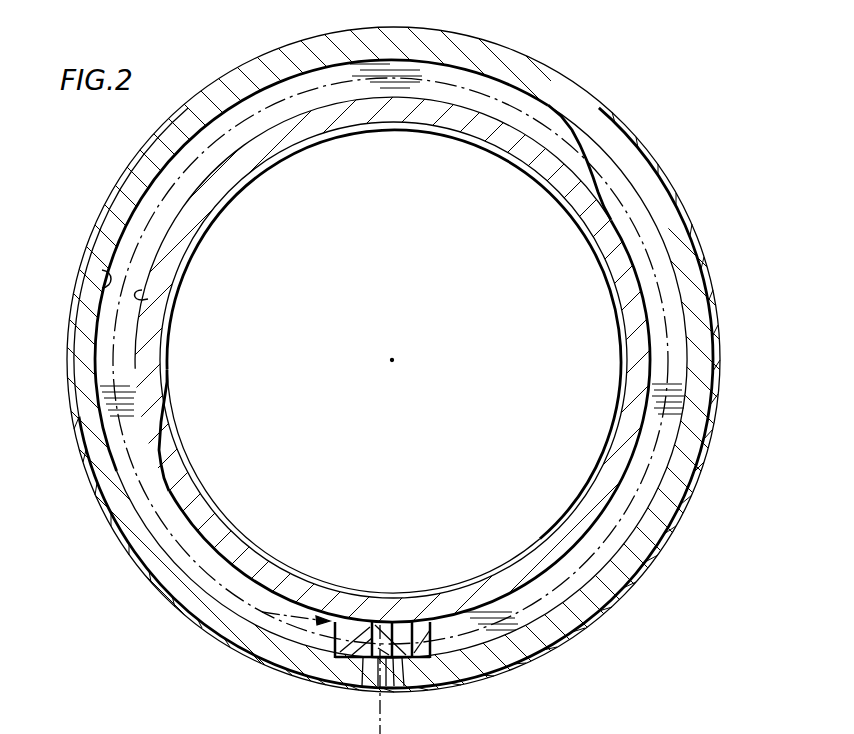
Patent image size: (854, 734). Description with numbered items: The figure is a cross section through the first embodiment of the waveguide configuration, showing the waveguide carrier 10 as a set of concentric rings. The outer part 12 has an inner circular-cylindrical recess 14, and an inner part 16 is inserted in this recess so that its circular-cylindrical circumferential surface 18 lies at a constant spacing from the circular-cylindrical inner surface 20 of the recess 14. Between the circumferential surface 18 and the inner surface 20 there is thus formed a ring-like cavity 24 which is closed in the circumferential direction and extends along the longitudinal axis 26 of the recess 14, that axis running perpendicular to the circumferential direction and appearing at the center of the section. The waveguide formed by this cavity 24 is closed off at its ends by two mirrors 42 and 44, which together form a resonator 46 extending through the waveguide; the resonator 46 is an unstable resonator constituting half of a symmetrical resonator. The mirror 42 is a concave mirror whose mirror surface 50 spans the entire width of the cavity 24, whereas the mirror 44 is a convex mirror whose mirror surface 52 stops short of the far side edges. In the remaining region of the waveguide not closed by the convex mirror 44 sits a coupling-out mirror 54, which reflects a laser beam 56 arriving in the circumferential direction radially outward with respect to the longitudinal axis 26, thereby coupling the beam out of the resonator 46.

The waveguide carrier 10 is at (623, 105).
The outer part 12 is at (507, 70).
The inner circular-cylindrical recess 14 is at (128, 246).
The inner part 16 is at (469, 120).
The circumferential surface 18 is at (146, 293).
The inner surface 20 is at (106, 280).
The ring-like cavity 24 is at (679, 337).
The longitudinal axis 26 is at (394, 359).
The mirror 42 is at (416, 622).
The mirror 44 is at (363, 622).
The resonator 46 is at (262, 612).
The mirror surface 50 is at (442, 642).
The mirror surface 52 is at (345, 650).
The coupling-out mirror 54 is at (393, 622).
The laser beam 56 is at (383, 720).